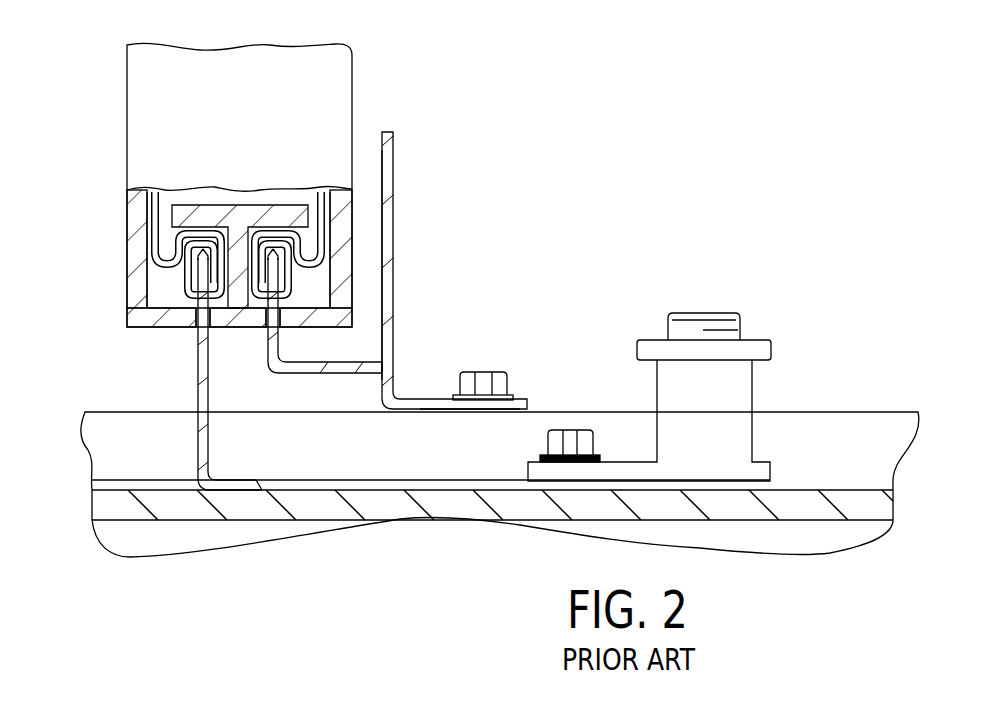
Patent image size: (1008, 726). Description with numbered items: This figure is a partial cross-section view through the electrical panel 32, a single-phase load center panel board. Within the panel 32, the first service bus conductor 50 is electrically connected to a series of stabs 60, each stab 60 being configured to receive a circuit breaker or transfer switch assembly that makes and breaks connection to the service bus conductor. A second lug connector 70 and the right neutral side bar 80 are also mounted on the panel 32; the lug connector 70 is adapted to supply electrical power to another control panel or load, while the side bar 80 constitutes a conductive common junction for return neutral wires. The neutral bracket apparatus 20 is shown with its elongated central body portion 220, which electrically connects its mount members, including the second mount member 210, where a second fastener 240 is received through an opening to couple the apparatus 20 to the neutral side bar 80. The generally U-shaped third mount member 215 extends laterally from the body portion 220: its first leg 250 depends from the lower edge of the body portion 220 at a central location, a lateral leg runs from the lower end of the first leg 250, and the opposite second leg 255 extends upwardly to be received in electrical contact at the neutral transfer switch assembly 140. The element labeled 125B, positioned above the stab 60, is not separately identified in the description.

The neutral transfer switch assembly 140 is at (372, 69).
The electrical connector 125B is at (88, 126).
The second leg 255 is at (263, 347).
The stab 60 is at (196, 398).
The third mount member 215 is at (304, 382).
The neutral bracket apparatus 20 is at (412, 167).
The elongated central body portion 220 is at (396, 262).
The second mount member 210 is at (422, 394).
The first leg 250 is at (384, 325).
The second fastener 240 is at (478, 372).
The right neutral side bar 80 is at (570, 411).
The second lug connector 70 is at (774, 348).
The first service bus conductor 50 is at (367, 480).
The electrical panel 32 is at (594, 209).